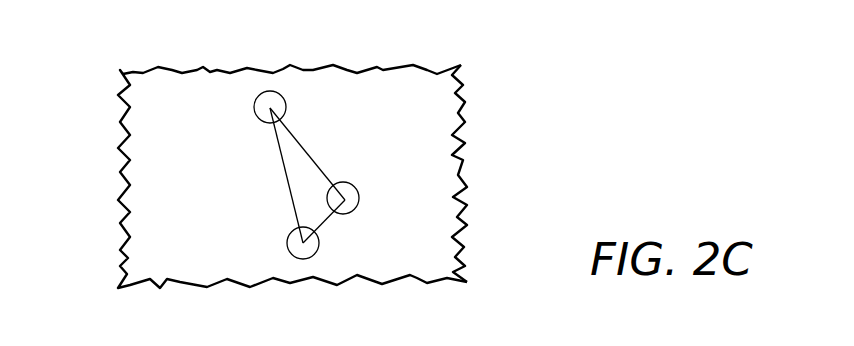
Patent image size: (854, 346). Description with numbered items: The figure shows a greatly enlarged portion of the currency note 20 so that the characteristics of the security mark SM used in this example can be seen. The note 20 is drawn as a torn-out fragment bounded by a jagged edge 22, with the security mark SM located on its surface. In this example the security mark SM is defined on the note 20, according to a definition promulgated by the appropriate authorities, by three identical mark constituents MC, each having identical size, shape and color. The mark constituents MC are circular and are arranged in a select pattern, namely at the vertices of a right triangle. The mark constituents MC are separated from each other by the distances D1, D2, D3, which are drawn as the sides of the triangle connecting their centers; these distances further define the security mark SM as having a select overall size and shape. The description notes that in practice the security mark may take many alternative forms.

The currency note 20 is at (270, 175).
The edge of sample 22 is at (446, 94).
The security mark SM is at (228, 190).
The mark constituent MC is at (255, 97).
The distance D1 is at (298, 138).
The distance D2 is at (333, 222).
The distance D3 is at (286, 177).